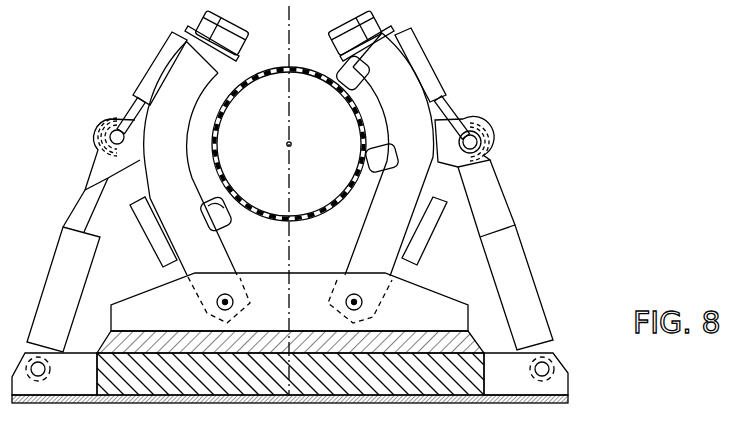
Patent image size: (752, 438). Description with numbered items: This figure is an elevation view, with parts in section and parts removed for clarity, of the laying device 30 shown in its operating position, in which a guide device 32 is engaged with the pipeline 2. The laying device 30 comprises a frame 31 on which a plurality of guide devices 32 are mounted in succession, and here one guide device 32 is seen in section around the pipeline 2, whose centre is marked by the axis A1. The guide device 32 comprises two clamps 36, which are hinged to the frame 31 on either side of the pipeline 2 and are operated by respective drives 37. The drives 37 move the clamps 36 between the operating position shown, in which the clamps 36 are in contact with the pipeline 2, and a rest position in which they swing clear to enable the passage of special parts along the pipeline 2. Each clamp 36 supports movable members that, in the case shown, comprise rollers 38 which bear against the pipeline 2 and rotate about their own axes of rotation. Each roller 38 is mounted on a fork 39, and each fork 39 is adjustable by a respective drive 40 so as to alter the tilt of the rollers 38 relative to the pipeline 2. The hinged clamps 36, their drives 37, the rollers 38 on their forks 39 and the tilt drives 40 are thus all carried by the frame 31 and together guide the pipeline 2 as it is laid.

The pipeline 2 is at (304, 66).
The pipe axis A1 is at (292, 143).
The laying device 30 is at (525, 88).
The frame 31 is at (507, 377).
The guide device 32 is at (527, 125).
The clamp 36 is at (133, 120).
The drive 37 is at (67, 257).
The roller 38 is at (212, 98).
The fork 39 is at (233, 212).
The drive 40 is at (217, 25).